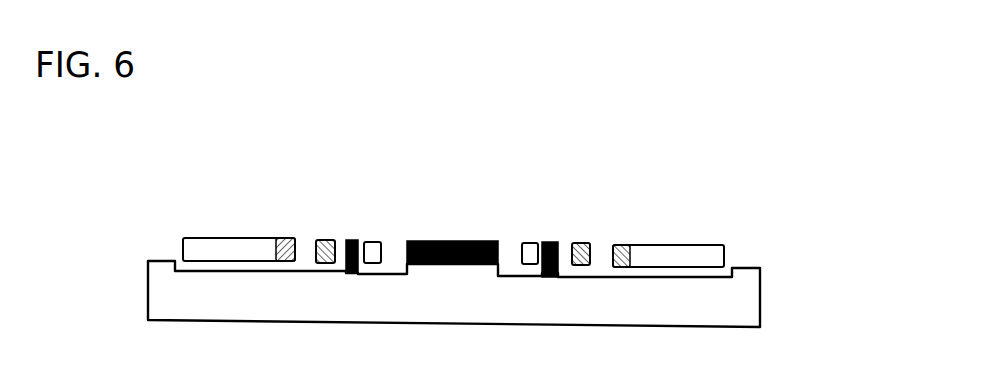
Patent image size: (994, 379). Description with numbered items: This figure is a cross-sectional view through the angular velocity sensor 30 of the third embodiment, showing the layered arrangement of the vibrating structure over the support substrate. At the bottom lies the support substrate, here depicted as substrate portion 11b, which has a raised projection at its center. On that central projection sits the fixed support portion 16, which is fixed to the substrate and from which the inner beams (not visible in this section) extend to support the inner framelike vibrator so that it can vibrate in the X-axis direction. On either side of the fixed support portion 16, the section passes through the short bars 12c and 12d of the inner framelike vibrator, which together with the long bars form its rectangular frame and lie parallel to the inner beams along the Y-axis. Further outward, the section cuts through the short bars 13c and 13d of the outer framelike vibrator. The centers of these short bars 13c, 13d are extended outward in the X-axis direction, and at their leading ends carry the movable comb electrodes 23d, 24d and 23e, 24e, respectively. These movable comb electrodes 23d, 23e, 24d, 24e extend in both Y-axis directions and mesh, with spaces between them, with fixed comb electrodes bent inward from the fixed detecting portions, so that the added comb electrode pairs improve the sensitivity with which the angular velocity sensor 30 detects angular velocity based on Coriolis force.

The substrate 11b is at (754, 303).
The angular velocity sensor 30 is at (772, 236).
The movable comb electrode 23e is at (197, 210).
The movable comb electrode 24e is at (208, 246).
The short bar 13d is at (288, 246).
The short bar 12d is at (322, 247).
The fixed support portion 16 is at (468, 250).
The short bar 12c is at (582, 250).
The short bar 13c is at (618, 252).
The movable comb electrode 23d is at (683, 212).
The movable comb electrode 24d is at (708, 256).